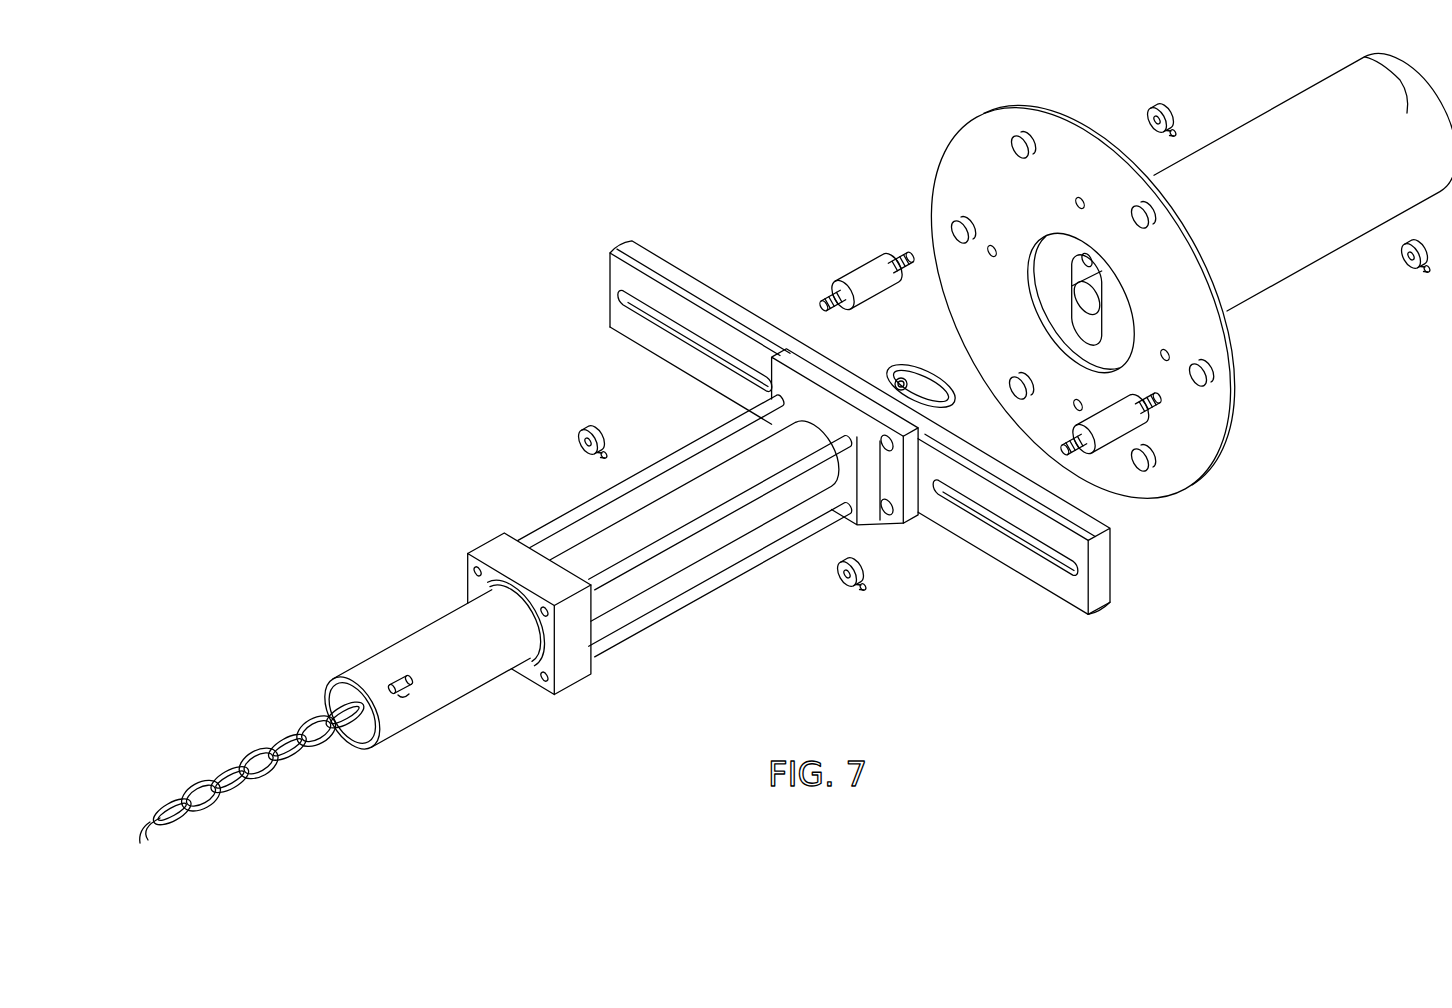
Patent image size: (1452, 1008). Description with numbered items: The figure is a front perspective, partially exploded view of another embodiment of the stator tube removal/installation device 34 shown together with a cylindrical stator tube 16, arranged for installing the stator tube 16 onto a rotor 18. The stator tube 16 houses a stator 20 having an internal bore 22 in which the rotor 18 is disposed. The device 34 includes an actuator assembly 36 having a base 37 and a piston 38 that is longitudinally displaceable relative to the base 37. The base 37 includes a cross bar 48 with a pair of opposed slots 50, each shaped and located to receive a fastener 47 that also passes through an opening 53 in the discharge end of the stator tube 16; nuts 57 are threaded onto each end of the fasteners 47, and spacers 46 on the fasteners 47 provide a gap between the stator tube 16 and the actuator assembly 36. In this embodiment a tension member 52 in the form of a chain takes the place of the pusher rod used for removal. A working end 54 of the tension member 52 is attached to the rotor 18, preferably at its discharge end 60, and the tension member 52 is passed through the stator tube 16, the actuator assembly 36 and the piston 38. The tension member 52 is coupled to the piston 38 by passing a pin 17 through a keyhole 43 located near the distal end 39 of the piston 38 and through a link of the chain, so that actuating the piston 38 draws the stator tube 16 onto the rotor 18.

The stator tube 16 is at (1328, 250).
The pin 17 is at (404, 694).
The rotor 18 is at (1098, 305).
The stator 20 is at (1043, 252).
The internal bore 22 is at (1086, 254).
The stator tube removal/installation device 34 is at (470, 413).
The actuator assembly 36 is at (565, 548).
The base 37 is at (727, 543).
The piston 38 is at (411, 641).
The distal end 39 is at (351, 672).
The keyhole 43 is at (409, 688).
The spacer 46 is at (866, 273).
The fastener 47 is at (834, 300).
The cross bar 48 is at (676, 266).
The slot 50 is at (657, 328).
The tension member 52 is at (263, 737).
The opening 53 is at (1013, 158).
The working end 54 is at (922, 365).
The nut 57 is at (1172, 118).
The discharge end 60 is at (1048, 307).